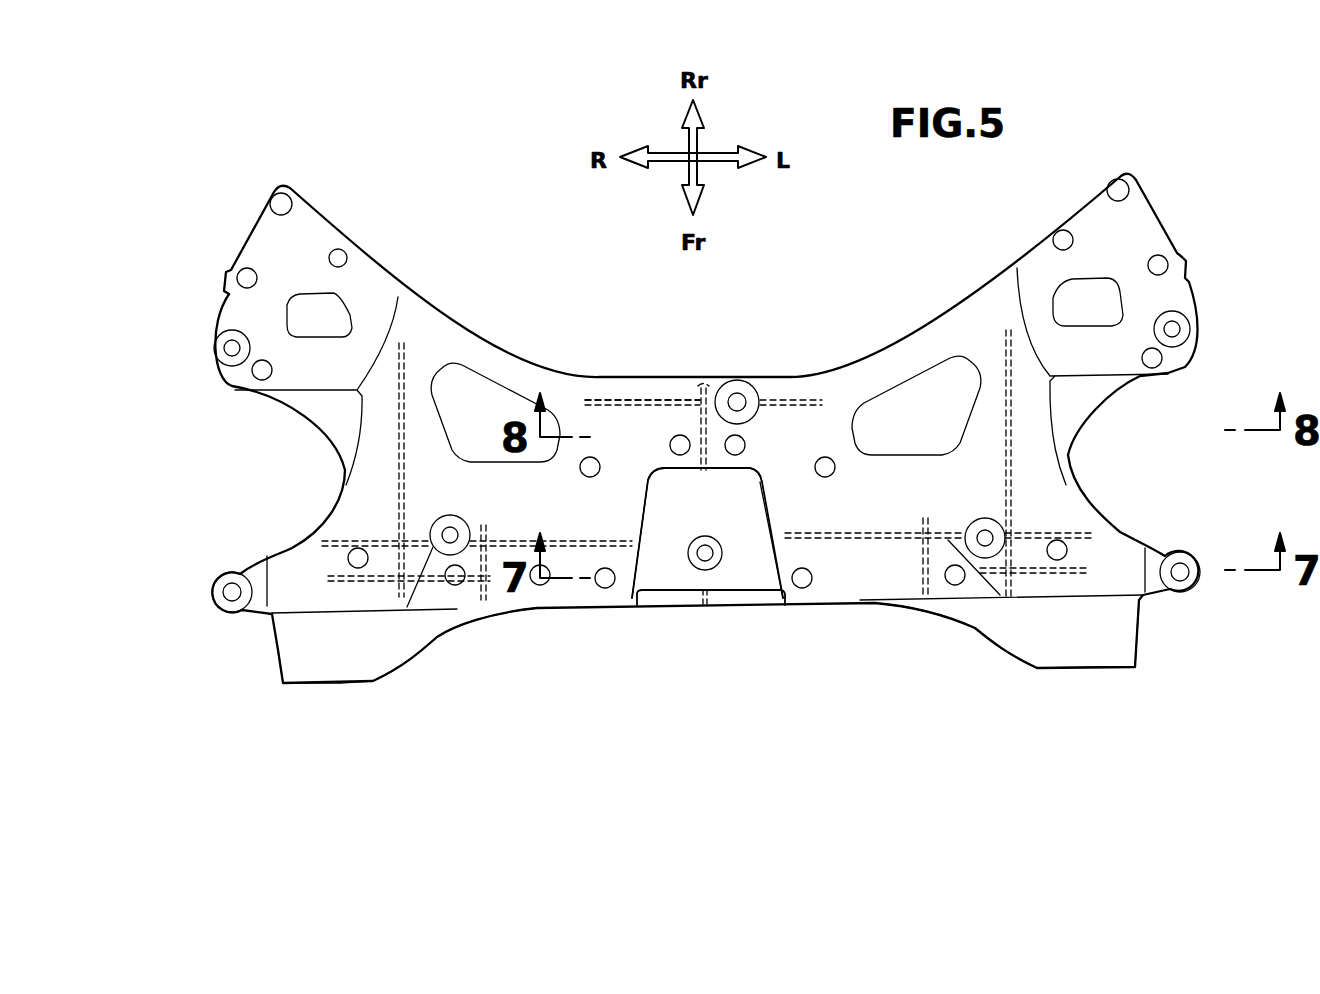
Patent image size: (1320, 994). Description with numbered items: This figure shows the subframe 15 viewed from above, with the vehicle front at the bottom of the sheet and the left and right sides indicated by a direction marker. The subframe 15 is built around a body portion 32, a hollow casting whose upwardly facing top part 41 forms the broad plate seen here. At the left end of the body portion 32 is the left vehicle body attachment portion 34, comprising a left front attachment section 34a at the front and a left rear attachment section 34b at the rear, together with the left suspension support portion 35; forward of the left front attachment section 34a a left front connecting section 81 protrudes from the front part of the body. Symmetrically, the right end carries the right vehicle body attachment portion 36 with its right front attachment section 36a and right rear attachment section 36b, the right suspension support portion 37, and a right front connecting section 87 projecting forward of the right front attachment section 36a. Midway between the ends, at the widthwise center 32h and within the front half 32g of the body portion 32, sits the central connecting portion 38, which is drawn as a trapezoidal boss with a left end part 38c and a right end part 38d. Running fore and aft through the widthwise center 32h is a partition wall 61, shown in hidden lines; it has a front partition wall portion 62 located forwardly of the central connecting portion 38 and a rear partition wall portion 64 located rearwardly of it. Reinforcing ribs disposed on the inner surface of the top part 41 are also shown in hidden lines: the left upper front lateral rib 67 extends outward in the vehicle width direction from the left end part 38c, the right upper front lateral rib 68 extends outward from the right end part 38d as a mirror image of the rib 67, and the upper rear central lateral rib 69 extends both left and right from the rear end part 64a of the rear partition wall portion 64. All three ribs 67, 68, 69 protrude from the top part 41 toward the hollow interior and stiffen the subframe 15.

The subframe 15 is at (270, 145).
The body portion 32 is at (641, 377).
The front half 32g is at (738, 598).
The widthwise center 32h is at (717, 462).
The left vehicle body attachment portion 34 is at (1170, 605).
The left front attachment section 34a is at (1197, 603).
The left rear attachment section 34b is at (1190, 330).
The left suspension support portion 35 is at (1120, 683).
The right vehicle body attachment portion 36 is at (220, 615).
The right front attachment section 36a is at (212, 595).
The right rear attachment section 36b is at (218, 350).
The right suspension support portion 37 is at (305, 683).
The central connecting portion 38 is at (660, 568).
The left end part 38c is at (780, 530).
The right end part 38d is at (640, 538).
The top part 41 is at (785, 490).
The partition wall 61 is at (708, 437).
The front partition wall portion 62 is at (700, 598).
The rear partition wall portion 64 is at (700, 429).
The rear end part 64a is at (707, 395).
The left upper front lateral rib 67 is at (850, 545).
The right upper front lateral rib 68 is at (573, 583).
The upper rear central lateral rib 69 is at (665, 403).
The left front connecting section 81 is at (1082, 665).
The right front connecting section 87 is at (358, 673).